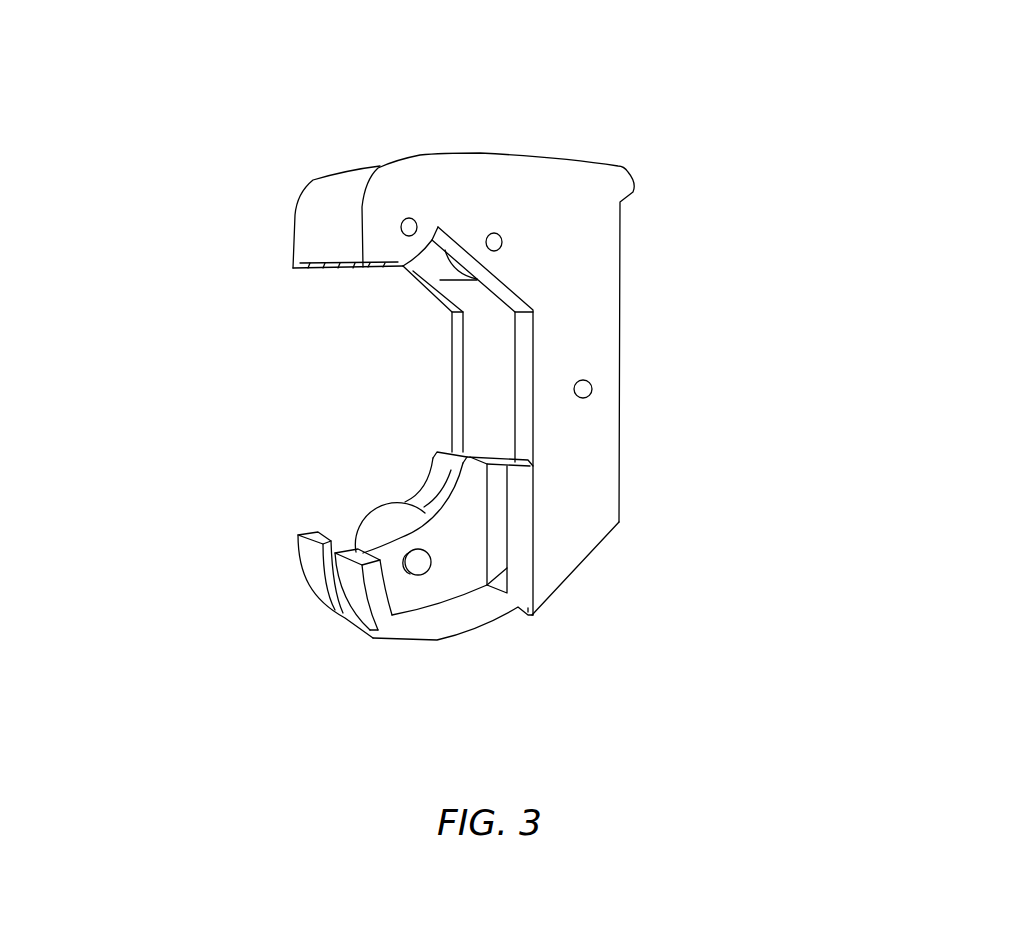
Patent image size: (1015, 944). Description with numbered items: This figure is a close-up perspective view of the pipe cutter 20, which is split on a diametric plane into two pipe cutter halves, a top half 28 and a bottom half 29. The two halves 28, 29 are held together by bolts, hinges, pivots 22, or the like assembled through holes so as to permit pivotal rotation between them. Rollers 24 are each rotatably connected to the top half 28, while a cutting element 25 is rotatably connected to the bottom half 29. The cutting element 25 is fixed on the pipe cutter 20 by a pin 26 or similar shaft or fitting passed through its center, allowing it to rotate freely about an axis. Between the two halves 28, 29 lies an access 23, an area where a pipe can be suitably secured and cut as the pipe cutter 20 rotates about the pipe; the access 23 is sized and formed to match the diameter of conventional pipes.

The pipe cutter 20 is at (934, 152).
The pivot 22 is at (593, 388).
The access 23 is at (397, 405).
The rollers 24 is at (438, 263).
The cutting element 25 is at (387, 518).
The pin 26 is at (418, 567).
The top half 28 is at (563, 233).
The bottom half 29 is at (470, 545).